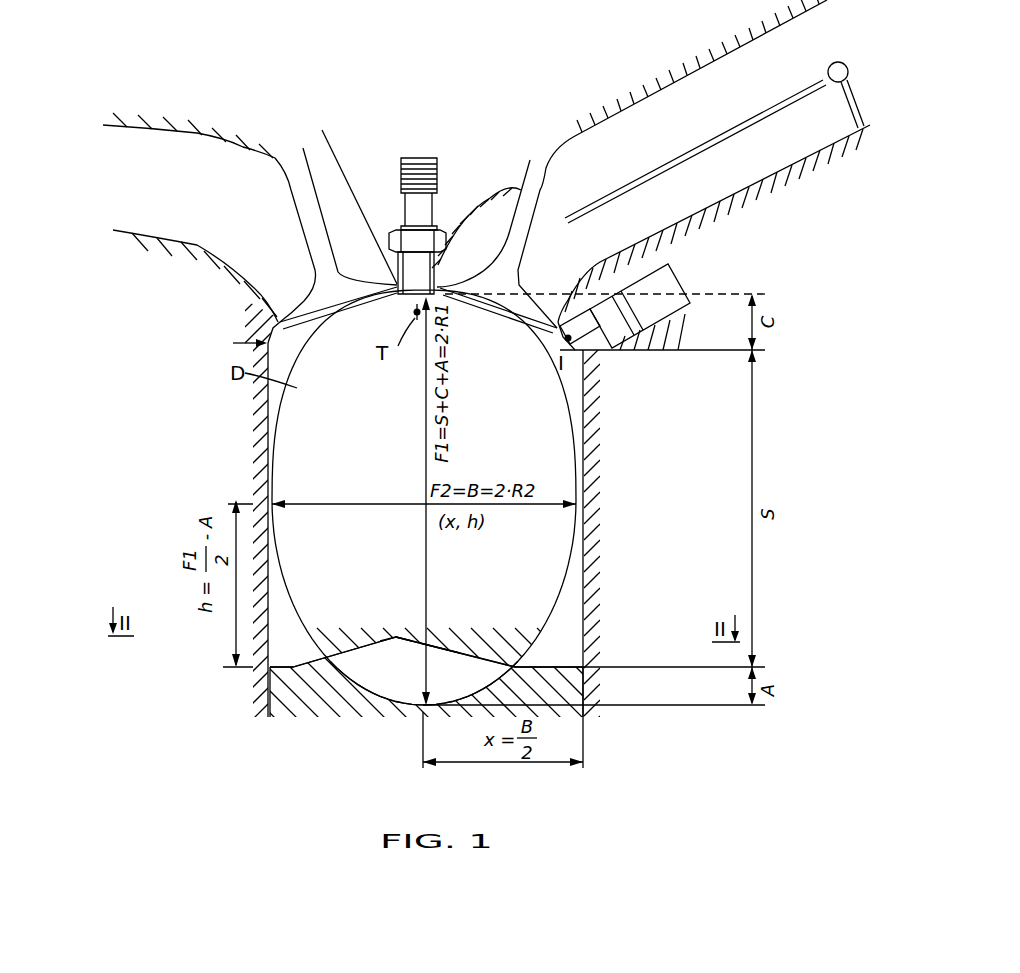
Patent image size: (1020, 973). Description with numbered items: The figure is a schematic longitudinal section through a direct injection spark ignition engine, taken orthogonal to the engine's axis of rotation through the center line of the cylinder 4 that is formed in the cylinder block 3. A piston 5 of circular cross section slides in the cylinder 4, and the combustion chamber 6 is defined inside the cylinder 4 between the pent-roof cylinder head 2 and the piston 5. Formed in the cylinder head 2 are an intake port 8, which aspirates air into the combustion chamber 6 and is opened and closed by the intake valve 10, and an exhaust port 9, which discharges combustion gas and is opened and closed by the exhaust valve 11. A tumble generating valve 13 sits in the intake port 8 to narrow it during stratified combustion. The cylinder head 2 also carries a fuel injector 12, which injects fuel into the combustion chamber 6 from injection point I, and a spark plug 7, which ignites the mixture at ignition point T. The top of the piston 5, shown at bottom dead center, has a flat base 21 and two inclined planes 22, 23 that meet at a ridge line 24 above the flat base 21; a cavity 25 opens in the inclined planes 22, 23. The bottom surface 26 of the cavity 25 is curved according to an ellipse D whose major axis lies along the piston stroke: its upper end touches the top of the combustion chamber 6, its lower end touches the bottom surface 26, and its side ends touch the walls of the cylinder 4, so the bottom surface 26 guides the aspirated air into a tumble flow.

The cylinder head 2 is at (259, 319).
The cylinder block 3 is at (259, 402).
The cylinder 4 is at (262, 428).
The piston 5 is at (290, 690).
The combustion chamber 6 is at (356, 439).
The spark plug 7 is at (405, 213).
The intake port 8 is at (596, 132).
The exhaust port 9 is at (242, 138).
The intake valve 10 is at (515, 232).
The exhaust valve 11 is at (305, 192).
The fuel injector 12 is at (670, 308).
The tumble generating valve 13 is at (842, 103).
The flat base 21 is at (293, 665).
The inclined plane 22 is at (345, 648).
The inclined plane 23 is at (508, 657).
The ridge line 24 is at (396, 634).
The cavity 25 is at (447, 654).
The bottom surface 26 is at (392, 698).